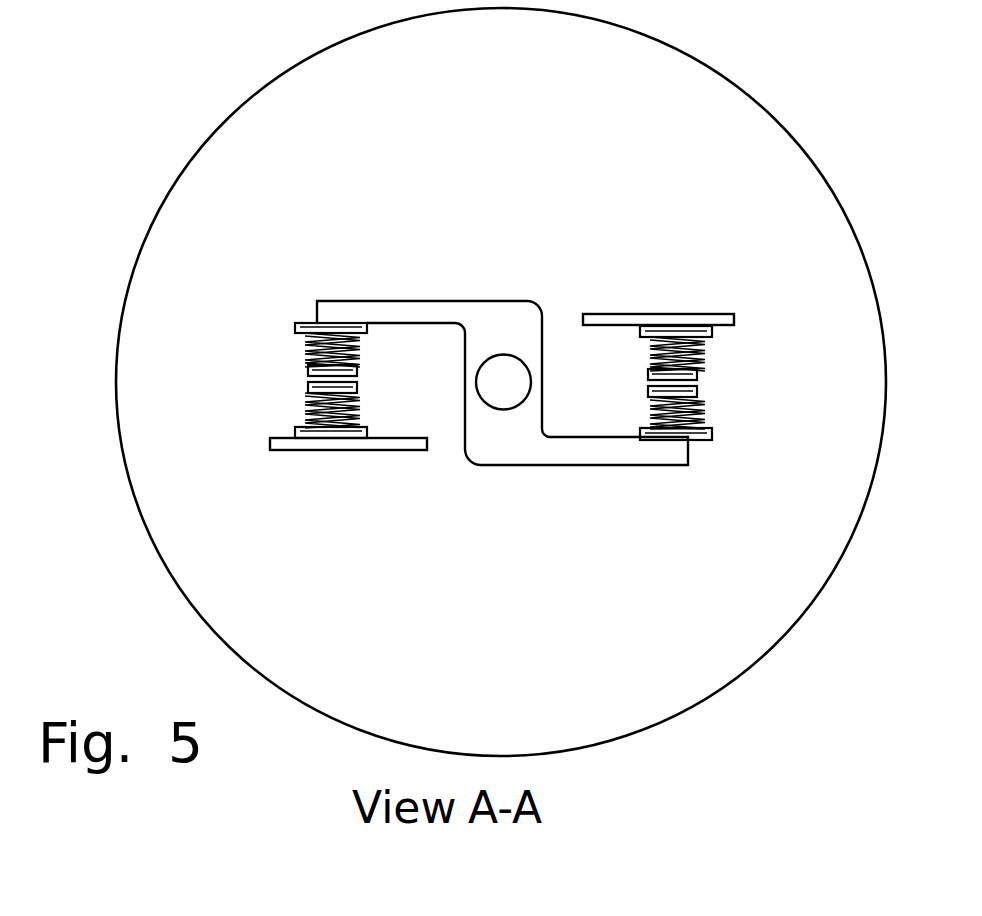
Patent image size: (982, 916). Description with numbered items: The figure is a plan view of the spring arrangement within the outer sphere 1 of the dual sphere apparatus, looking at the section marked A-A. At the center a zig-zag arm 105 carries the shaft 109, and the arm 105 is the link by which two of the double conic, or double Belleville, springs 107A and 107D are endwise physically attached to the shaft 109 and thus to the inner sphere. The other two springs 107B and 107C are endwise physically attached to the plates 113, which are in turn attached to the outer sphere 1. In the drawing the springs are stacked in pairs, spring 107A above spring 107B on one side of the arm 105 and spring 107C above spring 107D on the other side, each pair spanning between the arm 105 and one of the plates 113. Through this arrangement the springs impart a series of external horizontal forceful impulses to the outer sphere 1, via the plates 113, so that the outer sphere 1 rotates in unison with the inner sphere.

The outer sphere 1 is at (745, 88).
The zig-zag arm 105 is at (502, 318).
The double conic spring 107A is at (303, 348).
The double conic spring 107B is at (303, 410).
The double conic spring 107C is at (703, 348).
The double conic spring 107D is at (702, 408).
The shaft 109 is at (520, 386).
The plates 113 is at (272, 448).